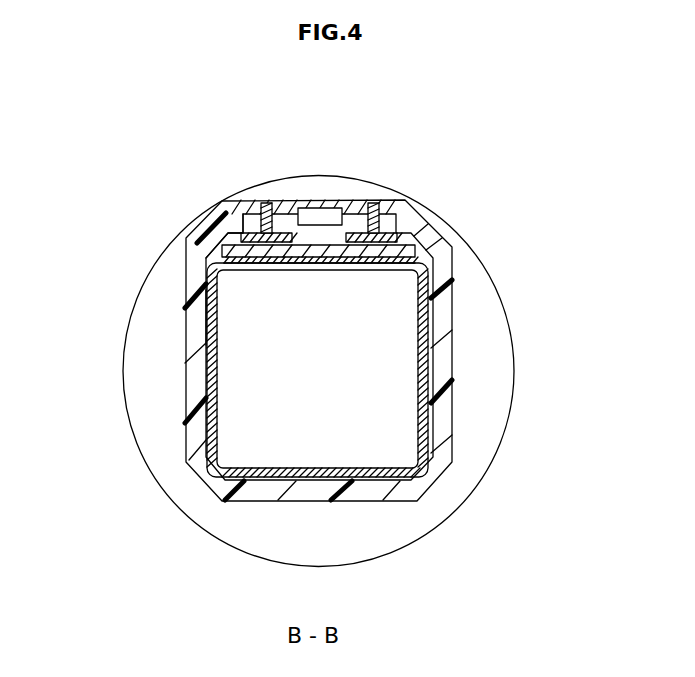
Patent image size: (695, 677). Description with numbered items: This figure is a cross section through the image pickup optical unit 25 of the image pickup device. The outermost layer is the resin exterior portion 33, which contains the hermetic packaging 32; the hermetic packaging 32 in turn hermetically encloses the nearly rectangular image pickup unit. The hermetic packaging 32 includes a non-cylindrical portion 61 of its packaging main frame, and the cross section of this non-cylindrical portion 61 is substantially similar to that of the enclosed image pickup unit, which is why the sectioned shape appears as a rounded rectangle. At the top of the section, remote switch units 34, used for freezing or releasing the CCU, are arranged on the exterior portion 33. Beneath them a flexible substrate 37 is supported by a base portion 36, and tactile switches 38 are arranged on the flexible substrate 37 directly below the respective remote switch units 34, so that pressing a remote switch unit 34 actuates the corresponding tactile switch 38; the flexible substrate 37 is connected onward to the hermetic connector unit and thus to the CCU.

The image pickup optical unit 25 is at (449, 108).
The hermetic packaging 32 is at (205, 317).
The resin exterior portion 33 is at (440, 315).
The remote switch units 34 is at (356, 206).
The base portion 36 is at (416, 255).
The flexible substrate 37 is at (228, 232).
The tactile switches 38 is at (243, 200).
The non-cylindrical portion 61 is at (210, 372).